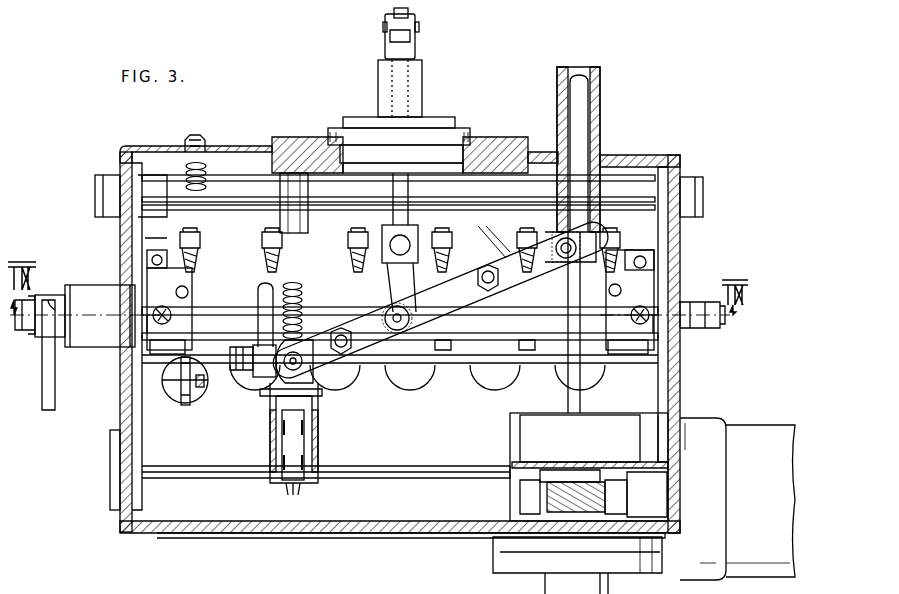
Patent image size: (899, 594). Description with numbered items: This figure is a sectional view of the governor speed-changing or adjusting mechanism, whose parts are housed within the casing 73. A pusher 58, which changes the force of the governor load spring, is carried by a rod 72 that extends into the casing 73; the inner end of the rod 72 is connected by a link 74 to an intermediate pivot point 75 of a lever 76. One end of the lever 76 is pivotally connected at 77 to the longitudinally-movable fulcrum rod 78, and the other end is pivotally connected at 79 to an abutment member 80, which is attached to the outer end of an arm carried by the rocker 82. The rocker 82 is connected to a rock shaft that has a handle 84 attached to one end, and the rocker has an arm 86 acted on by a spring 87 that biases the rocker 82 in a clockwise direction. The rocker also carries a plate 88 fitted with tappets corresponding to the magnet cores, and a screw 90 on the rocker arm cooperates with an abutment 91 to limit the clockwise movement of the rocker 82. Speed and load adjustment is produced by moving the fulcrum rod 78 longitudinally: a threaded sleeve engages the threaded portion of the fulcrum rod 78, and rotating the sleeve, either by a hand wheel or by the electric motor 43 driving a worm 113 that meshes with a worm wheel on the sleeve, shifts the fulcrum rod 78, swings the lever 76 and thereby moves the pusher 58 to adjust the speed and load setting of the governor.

The pusher 58 is at (405, 33).
The casing 73 is at (244, 152).
The rod 72 is at (392, 185).
The plate 88 is at (478, 226).
The abutment 91 is at (298, 229).
The screw 90 is at (290, 285).
The link 74 is at (384, 278).
The lever 76 is at (426, 298).
The pivot connection 77 is at (558, 262).
The handle 84 is at (57, 378).
The pivot connection 79 is at (285, 364).
The abutment member 80 is at (302, 384).
The intermediate pivot point 75 is at (396, 330).
The rocker 82 is at (487, 332).
The fulcrum rod 78 is at (572, 388).
The arm 86 is at (180, 403).
The spring 87 is at (199, 403).
The worm 113 is at (600, 496).
The motor 43 is at (760, 442).